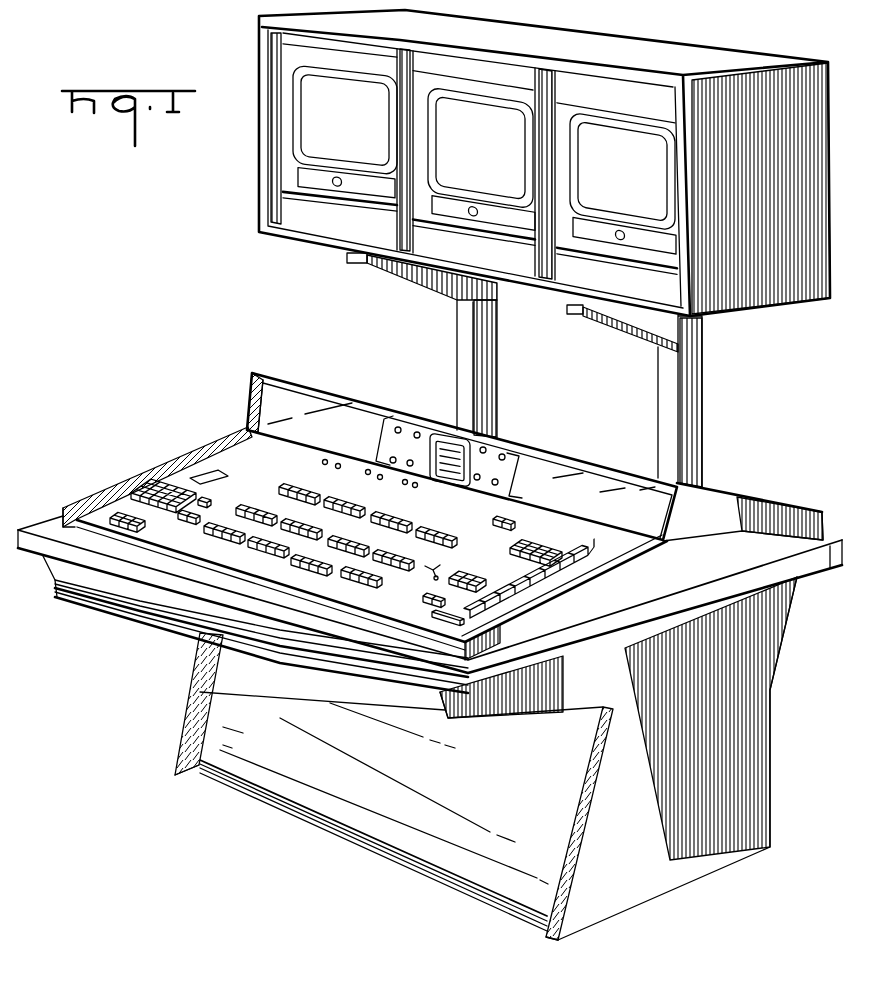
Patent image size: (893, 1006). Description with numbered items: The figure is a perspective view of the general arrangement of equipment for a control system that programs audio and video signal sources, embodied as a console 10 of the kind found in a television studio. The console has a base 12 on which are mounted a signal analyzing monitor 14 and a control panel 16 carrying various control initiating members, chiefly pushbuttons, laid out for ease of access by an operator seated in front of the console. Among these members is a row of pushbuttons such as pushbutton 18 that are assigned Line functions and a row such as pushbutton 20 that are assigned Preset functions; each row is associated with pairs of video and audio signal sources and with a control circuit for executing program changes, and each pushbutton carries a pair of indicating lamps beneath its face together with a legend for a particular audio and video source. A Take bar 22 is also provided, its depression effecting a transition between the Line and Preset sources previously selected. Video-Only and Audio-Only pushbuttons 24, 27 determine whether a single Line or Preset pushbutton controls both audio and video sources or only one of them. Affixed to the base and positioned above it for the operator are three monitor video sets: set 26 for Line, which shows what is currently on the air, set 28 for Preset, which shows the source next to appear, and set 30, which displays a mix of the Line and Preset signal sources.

The console 10 is at (132, 733).
The base 12 is at (340, 817).
The signal analyzing monitor 14 is at (523, 467).
The control panel 16 is at (550, 527).
The Line pushbutton 18 is at (248, 506).
The Preset pushbutton 20 is at (205, 520).
The Take bar 22 is at (205, 498).
The Video-Only pushbutton 24 is at (180, 512).
The Line monitor video set 26 is at (440, 247).
The Audio-Only pushbutton 27 is at (183, 517).
The Preset monitor video set 28 is at (578, 277).
The mix monitor video set 30 is at (293, 222).